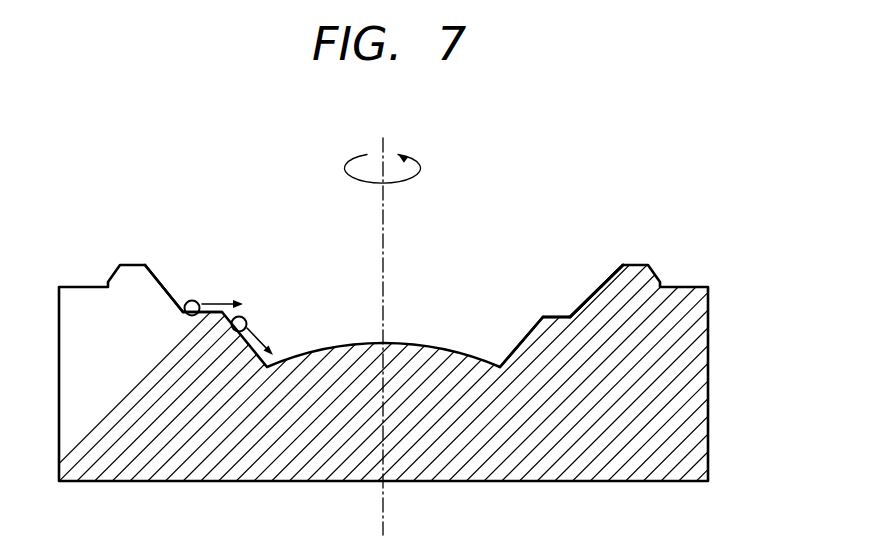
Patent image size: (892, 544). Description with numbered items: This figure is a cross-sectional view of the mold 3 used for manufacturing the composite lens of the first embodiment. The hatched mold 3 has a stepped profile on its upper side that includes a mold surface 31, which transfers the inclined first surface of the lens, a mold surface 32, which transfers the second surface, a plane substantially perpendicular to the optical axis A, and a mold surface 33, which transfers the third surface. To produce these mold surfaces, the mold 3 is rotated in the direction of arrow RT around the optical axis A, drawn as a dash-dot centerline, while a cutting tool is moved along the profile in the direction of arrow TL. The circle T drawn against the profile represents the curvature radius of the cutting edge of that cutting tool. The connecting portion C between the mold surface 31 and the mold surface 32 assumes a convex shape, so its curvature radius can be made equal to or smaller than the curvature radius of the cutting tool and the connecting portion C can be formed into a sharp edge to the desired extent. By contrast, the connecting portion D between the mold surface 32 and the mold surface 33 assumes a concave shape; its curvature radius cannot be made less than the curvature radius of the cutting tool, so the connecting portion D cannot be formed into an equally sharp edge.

The mold 3 is at (693, 397).
The mold surface 31 is at (520, 341).
The mold surface 32 is at (558, 316).
The mold surface 33 is at (609, 278).
The circle T is at (191, 299).
The arrow TL is at (217, 298).
The arrow RT is at (348, 151).
The optical axis A is at (395, 339).
The connecting portion C is at (222, 335).
The connecting portion D is at (183, 332).